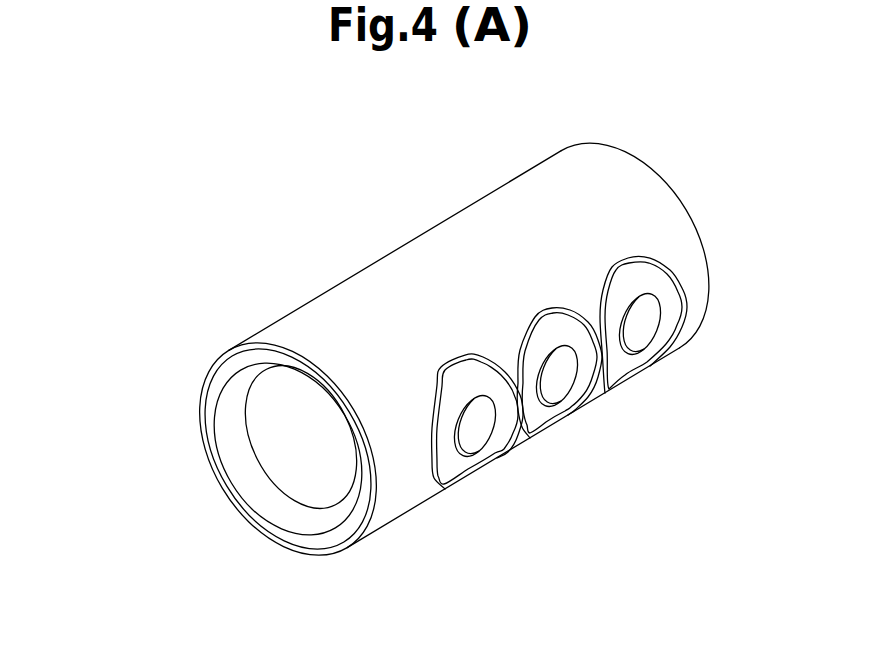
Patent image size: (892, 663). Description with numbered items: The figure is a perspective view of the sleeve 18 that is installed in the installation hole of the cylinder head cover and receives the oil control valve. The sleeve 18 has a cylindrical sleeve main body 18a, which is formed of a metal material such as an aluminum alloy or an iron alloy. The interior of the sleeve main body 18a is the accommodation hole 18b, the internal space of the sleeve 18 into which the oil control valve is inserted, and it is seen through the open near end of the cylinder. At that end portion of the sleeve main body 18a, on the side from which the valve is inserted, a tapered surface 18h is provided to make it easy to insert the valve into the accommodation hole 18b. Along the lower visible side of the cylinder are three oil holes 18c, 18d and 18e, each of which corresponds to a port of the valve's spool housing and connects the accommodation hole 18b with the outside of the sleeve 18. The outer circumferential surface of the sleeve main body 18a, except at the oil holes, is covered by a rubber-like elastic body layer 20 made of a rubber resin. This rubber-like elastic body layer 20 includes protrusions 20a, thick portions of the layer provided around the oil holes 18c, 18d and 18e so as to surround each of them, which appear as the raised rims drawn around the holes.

The sleeve 18 is at (343, 190).
The sleeve main body 18a is at (259, 352).
The accommodation hole 18b is at (300, 481).
The oil hole 18c is at (471, 430).
The oil hole 18d is at (553, 380).
The oil hole 18e is at (637, 332).
The tapered surface 18h is at (238, 452).
The rubber-like elastic body layer 20 is at (561, 167).
The protrusion 20a is at (545, 306).